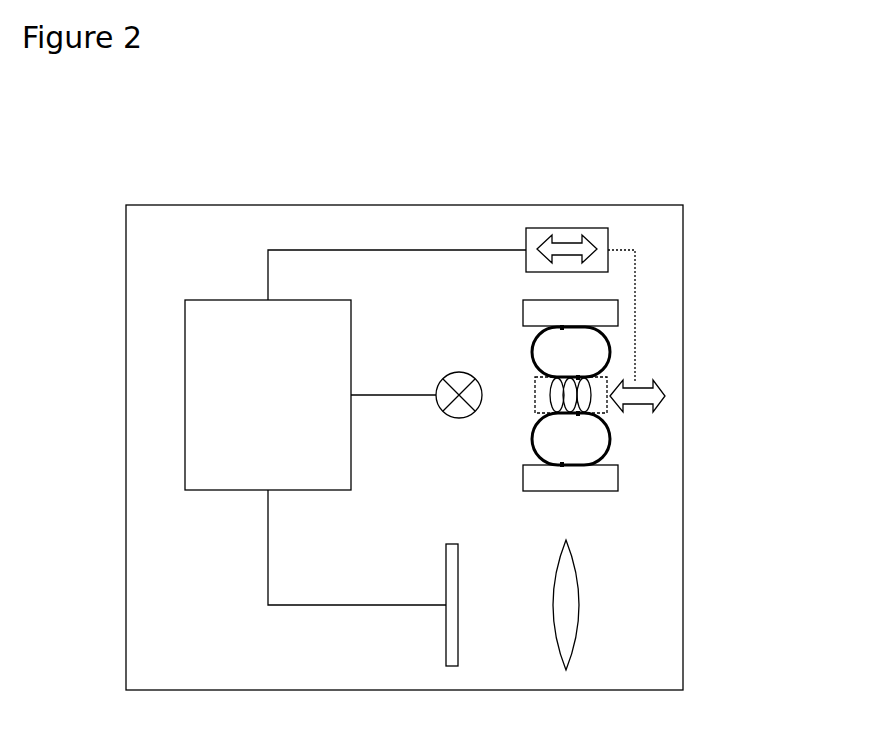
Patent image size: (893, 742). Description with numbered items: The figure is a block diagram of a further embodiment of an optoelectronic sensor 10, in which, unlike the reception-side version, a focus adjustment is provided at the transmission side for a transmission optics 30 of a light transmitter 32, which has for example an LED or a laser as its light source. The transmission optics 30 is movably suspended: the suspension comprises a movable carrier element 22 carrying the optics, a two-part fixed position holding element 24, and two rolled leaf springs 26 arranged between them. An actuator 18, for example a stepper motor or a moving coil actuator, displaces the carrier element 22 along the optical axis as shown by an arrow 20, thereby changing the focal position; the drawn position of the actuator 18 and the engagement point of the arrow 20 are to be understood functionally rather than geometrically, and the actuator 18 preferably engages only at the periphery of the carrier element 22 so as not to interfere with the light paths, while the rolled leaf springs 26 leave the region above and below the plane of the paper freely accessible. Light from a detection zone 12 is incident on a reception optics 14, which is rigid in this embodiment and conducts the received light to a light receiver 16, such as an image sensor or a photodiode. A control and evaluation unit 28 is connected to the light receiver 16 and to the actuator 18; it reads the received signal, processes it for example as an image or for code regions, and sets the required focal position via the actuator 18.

The optoelectronic sensor 10 is at (677, 163).
The detection zone 12 is at (891, 242).
The reception optics 14 is at (580, 622).
The light receiver 16 is at (448, 636).
The actuator 18 is at (525, 240).
The arrow 20 is at (668, 396).
The carrier element 22 is at (536, 410).
The holding element 24 is at (619, 313).
The rolled leaf springs 26 is at (610, 355).
The control and evaluation unit 28 is at (186, 398).
The transmission optics 30 is at (536, 392).
The light transmitter 32 is at (440, 405).